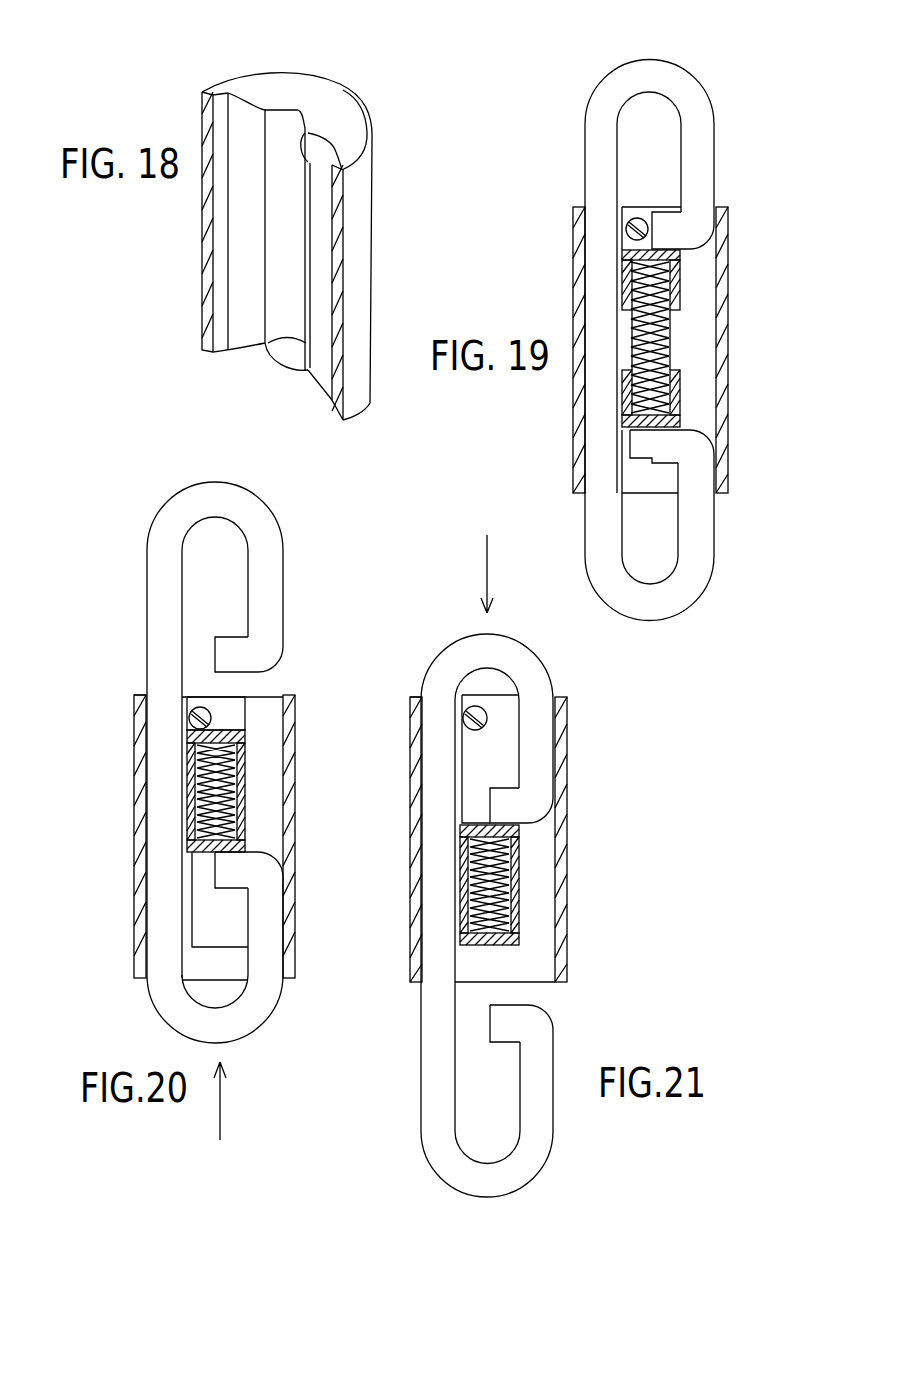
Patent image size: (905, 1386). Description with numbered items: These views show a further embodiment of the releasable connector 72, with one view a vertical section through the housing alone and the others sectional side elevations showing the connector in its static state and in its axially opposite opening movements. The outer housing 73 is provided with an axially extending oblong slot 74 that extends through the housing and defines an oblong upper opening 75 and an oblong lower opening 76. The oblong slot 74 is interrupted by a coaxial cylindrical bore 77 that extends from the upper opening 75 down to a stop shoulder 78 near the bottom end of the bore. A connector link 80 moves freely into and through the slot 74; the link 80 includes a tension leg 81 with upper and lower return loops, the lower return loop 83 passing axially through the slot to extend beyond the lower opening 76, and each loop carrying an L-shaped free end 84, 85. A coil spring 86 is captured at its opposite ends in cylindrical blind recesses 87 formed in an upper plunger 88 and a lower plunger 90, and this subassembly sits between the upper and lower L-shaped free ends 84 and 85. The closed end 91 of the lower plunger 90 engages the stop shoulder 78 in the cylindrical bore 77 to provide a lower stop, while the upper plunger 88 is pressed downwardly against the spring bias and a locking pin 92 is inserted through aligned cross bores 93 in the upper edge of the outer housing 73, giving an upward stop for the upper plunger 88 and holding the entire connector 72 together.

In FIG. 19, the connector 72 is at (737, 181).
In FIG. 20, the connector 72 is at (118, 643).
In FIG. 21, the connector 72 is at (594, 754).
In FIG. 18, the outer housing 73 is at (362, 272).
In FIG. 19, the outer housing 73 is at (728, 382).
In FIG. 20, the outer housing 73 is at (285, 828).
In FIG. 21, the outer housing 73 is at (568, 881).
In FIG. 19, the oblong slot 74 is at (728, 292).
In FIG. 20, the oblong slot 74 is at (284, 724).
In FIG. 21, the oblong slot 74 is at (568, 949).
In FIG. 18, the upper opening 75 is at (252, 116).
In FIG. 20, the upper opening 75 is at (147, 688).
In FIG. 21, the upper opening 75 is at (440, 697).
In FIG. 20, the lower opening 76 is at (150, 942).
In FIG. 21, the lower opening 76 is at (425, 950).
In FIG. 18, the cylindrical bore 77 is at (286, 124).
In FIG. 20, the cylindrical bore 77 is at (200, 878).
In FIG. 18, the stop shoulder 78 is at (290, 349).
In FIG. 20, the stop shoulder 78 is at (226, 945).
In FIG. 19, the connector link 80 is at (604, 390).
In FIG. 20, the connector link 80 is at (152, 778).
In FIG. 19, the tension leg 81 is at (598, 288).
In FIG. 20, the tension leg 81 is at (146, 742).
In FIG. 21, the tension leg 81 is at (440, 840).
In FIG. 19, the lower return loop 83 is at (673, 608).
In FIG. 20, the lower return loop 83 is at (248, 1026).
In FIG. 21, the lower return loop 83 is at (460, 1176).
In FIG. 19, the upper L-shaped free end 84 is at (662, 222).
In FIG. 20, the upper L-shaped free end 84 is at (225, 654).
In FIG. 21, the upper L-shaped free end 84 is at (500, 795).
In FIG. 19, the lower L-shaped free end 85 is at (700, 432).
In FIG. 21, the lower L-shaped free end 85 is at (512, 1005).
In FIG. 19, the coil spring 86 is at (700, 334).
In FIG. 20, the coil spring 86 is at (216, 797).
In FIG. 19, the cylindrical blind recess 87 is at (630, 442).
In FIG. 20, the cylindrical blind recess 87 is at (231, 730).
In FIG. 19, the upper plunger 88 is at (700, 270).
In FIG. 19, the lower plunger 90 is at (700, 390).
In FIG. 21, the lower plunger 90 is at (520, 900).
In FIG. 21, the closed end 91 is at (472, 948).
In FIG. 19, the locking pin 92 is at (626, 229).
In FIG. 20, the locking pin 92 is at (216, 713).
In FIG. 21, the locking pin 92 is at (481, 712).
In FIG. 21, the cross bores 93 is at (473, 706).